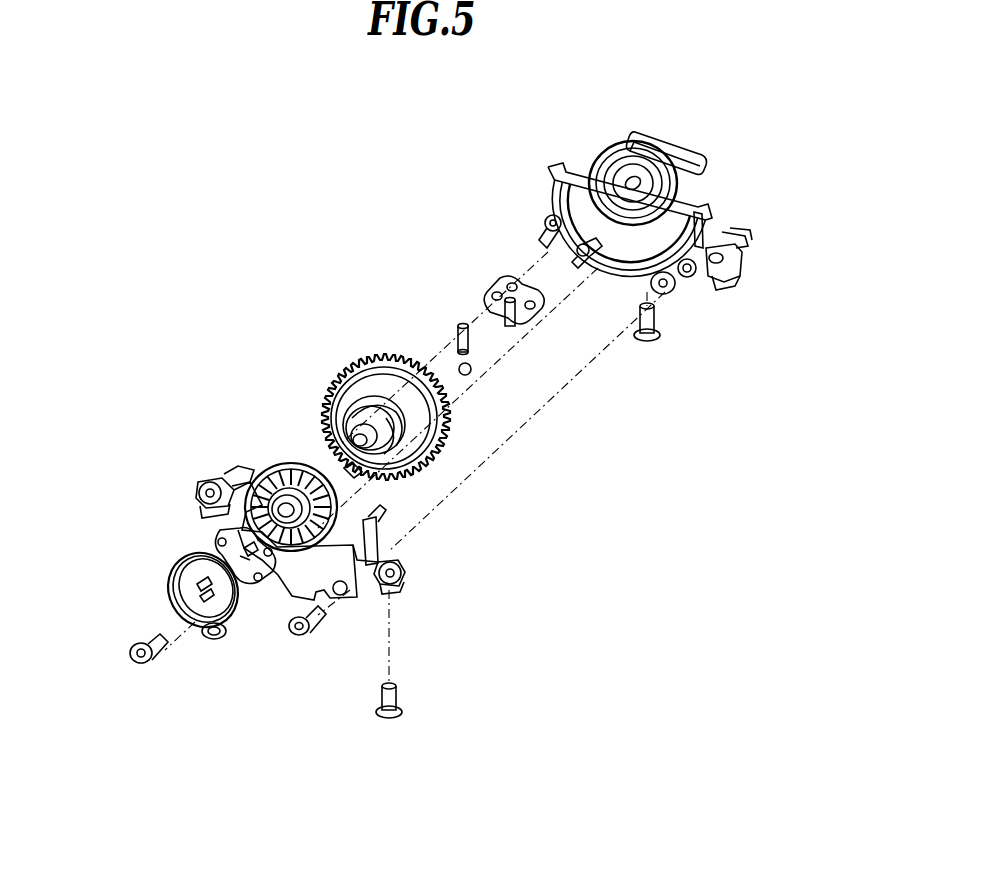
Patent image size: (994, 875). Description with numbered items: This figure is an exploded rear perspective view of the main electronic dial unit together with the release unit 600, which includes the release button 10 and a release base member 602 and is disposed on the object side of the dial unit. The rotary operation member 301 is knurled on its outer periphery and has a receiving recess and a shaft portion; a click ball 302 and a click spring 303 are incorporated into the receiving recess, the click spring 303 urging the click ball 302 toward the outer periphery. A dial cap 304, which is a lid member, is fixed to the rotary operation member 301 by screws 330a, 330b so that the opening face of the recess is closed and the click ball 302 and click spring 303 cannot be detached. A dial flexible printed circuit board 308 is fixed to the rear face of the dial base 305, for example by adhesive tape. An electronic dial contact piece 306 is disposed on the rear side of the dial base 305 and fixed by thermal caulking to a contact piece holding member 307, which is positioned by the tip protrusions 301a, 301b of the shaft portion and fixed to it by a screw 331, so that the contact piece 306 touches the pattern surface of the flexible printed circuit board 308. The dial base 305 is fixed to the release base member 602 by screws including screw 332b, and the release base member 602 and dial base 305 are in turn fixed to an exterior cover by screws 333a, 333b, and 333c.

The release button 10 is at (636, 134).
The release unit 600 is at (556, 168).
The release base member 602 is at (706, 278).
The screw 330a is at (583, 264).
The screw 330b is at (548, 226).
The screw 333a is at (656, 342).
The dial cap 304 is at (490, 286).
The click spring 303 is at (460, 328).
The click ball 302 is at (468, 374).
The rotary operation member 301 is at (355, 362).
The tip protrusion 301a is at (372, 438).
The tip protrusion 301b is at (354, 474).
The dial flexible printed circuit board 308 is at (284, 488).
The dial base 305 is at (221, 487).
The electronic dial contact piece 306 is at (214, 541).
The contact piece holding member 307 is at (170, 578).
The screw 331 is at (132, 648).
The screw 332b is at (300, 637).
The screw 333b is at (215, 642).
The screw 333c is at (402, 710).